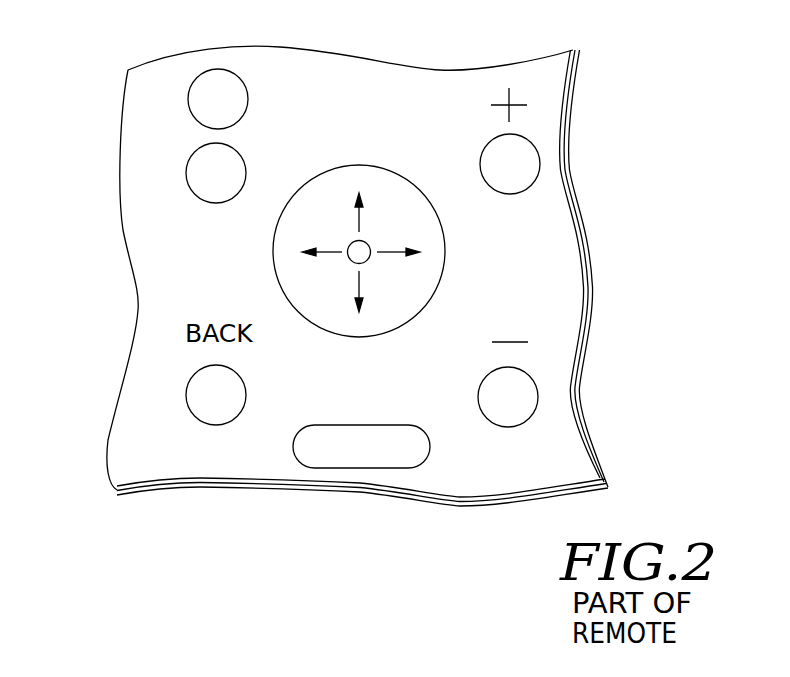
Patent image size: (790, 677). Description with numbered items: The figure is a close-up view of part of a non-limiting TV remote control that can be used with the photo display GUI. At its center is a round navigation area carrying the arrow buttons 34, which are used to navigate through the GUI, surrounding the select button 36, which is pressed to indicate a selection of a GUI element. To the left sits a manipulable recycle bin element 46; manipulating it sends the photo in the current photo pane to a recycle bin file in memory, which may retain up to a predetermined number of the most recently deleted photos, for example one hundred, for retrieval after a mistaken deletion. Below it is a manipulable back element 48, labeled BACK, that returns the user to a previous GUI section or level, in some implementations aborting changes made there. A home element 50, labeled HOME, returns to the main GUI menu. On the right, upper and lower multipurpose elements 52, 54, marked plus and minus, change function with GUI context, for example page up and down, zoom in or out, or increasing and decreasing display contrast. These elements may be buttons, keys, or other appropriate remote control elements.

The arrow buttons 34 is at (303, 250).
The select button 36 is at (375, 248).
The manipulable recycle bin element 46 is at (207, 172).
The manipulable back element 48 is at (203, 387).
The home element 50 is at (402, 463).
The upper multipurpose element 52 is at (522, 162).
The lower multipurpose element 54 is at (522, 395).